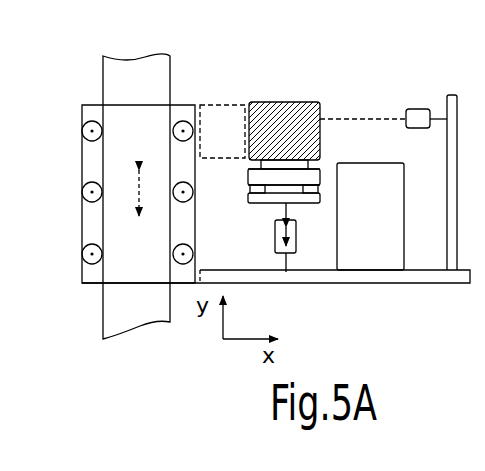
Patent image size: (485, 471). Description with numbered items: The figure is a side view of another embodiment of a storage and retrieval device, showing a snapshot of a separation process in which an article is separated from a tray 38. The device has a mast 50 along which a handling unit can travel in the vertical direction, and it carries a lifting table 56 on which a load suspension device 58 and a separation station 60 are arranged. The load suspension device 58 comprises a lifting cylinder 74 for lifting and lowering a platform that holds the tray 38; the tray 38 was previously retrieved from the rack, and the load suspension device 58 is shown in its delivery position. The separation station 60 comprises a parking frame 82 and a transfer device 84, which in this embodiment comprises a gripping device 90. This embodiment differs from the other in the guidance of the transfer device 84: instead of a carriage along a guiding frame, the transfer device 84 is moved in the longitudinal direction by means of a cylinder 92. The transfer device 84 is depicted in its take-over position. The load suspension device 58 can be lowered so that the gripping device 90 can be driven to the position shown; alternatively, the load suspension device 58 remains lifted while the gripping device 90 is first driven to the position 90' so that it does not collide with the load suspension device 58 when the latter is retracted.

The tray 38 is at (248, 178).
The mast 50 is at (102, 313).
The lifting table 56 is at (330, 284).
The load suspension device 58 is at (250, 212).
The separation station 60 is at (390, 245).
The lifting cylinder 74 is at (275, 241).
The parking frame 82 is at (340, 212).
The transfer device 84 is at (326, 96).
The gripping device 90 is at (327, 131).
The gripping device in retracted position 90' is at (238, 88).
The cylinder 92 is at (416, 108).